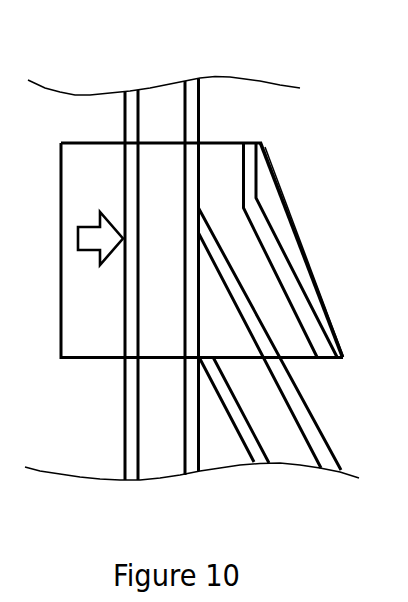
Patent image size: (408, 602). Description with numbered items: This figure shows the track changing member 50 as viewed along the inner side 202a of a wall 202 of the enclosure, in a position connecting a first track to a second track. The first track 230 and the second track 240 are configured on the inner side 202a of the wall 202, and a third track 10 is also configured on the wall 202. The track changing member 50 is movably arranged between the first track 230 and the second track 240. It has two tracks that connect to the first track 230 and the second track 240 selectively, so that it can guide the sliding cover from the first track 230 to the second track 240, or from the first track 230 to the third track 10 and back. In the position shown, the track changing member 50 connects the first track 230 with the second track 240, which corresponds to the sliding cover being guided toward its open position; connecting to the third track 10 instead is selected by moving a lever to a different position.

The third track 10 is at (296, 448).
The track changing member 50 is at (226, 150).
The wall 202 is at (43, 99).
The inner side 202a is at (56, 448).
The first track 230 is at (158, 90).
The second track 240 is at (167, 467).